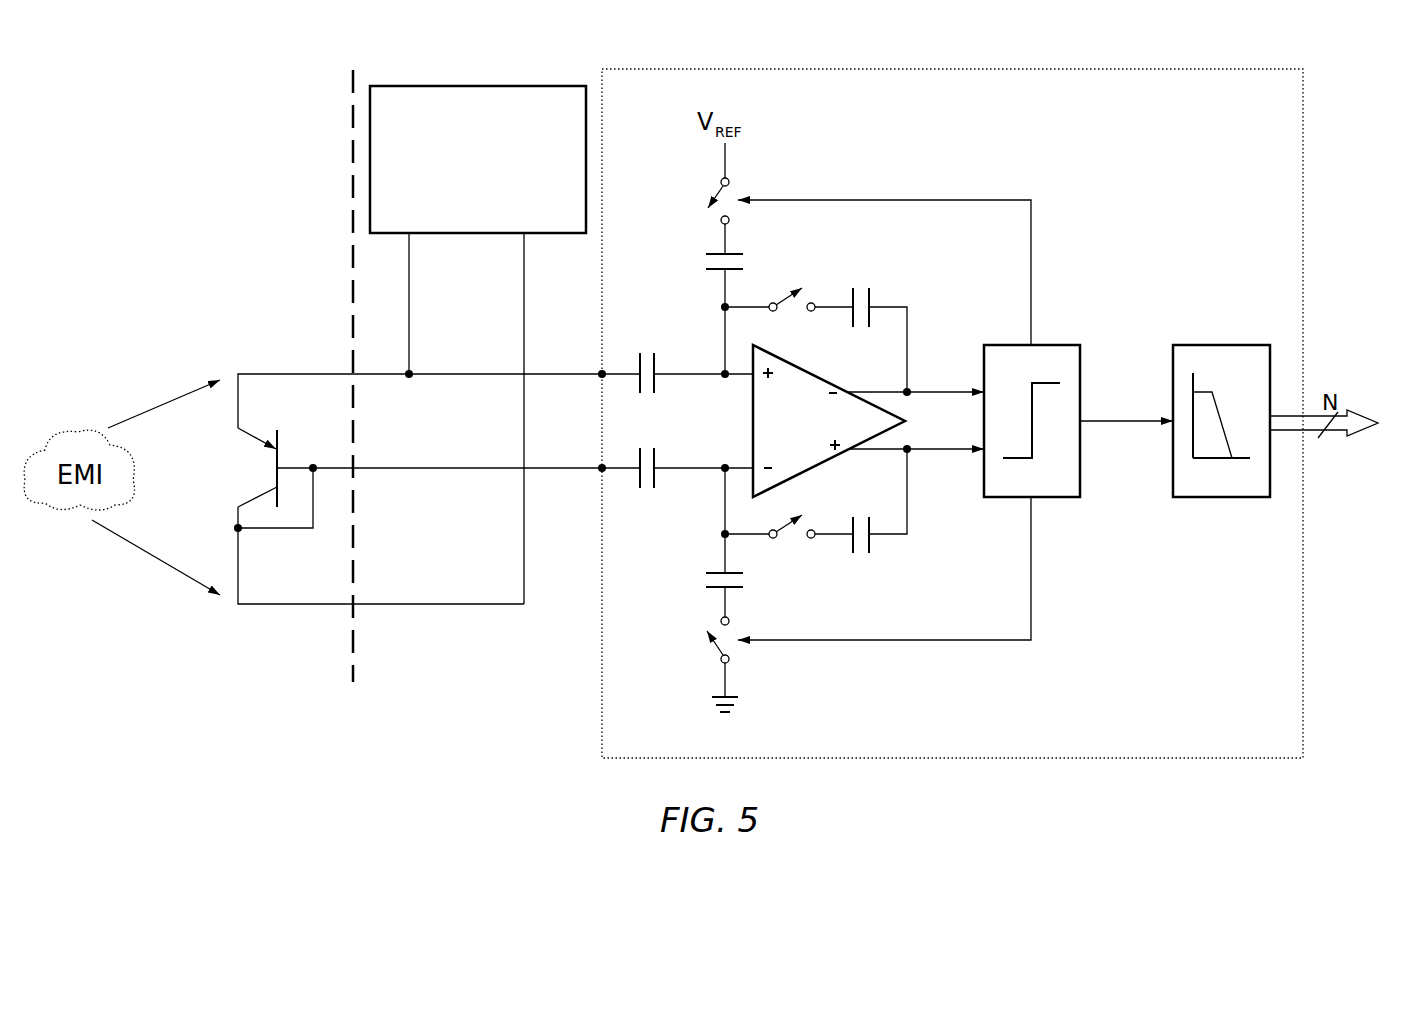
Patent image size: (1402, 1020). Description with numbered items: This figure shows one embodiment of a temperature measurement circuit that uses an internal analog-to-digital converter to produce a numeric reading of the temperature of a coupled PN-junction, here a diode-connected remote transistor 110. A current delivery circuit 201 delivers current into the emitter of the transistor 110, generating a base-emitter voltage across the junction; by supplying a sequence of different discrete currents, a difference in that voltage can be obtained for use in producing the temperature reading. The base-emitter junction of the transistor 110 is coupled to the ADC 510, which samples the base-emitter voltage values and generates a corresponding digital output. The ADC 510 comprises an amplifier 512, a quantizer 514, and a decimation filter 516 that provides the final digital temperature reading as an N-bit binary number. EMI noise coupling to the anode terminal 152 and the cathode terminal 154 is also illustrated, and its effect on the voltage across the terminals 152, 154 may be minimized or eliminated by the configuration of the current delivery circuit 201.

The remote transistor 110 is at (237, 442).
The anode terminal 152 is at (235, 362).
The cathode terminal 154 is at (233, 612).
The current delivery circuit 201 is at (577, 226).
The ADC 510 is at (1292, 742).
The amplifier 512 is at (812, 433).
The quantizer 514 is at (1052, 492).
The decimation filter 516 is at (1242, 492).